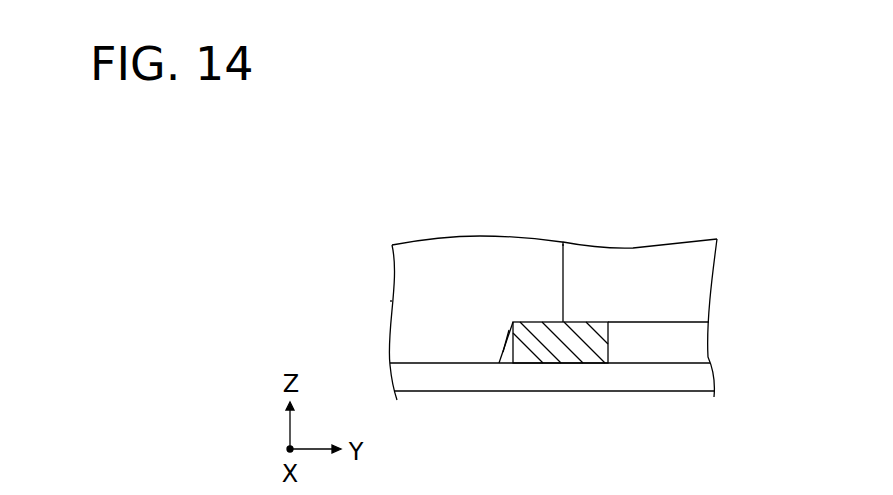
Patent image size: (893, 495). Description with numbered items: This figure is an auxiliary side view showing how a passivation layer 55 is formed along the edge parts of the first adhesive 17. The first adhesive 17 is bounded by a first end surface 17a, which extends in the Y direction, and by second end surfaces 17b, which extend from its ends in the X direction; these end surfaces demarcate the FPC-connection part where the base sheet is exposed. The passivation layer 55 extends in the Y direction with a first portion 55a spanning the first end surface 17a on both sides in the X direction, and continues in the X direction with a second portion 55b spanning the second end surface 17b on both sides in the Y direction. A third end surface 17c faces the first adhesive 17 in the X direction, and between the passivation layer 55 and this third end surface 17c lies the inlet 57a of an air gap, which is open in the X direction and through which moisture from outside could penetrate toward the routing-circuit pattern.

The first adhesive 17 is at (478, 224).
The first end surface 17a is at (644, 282).
The second end surface 17b is at (563, 283).
The third end surface 17c is at (425, 299).
The passivation layer 55 is at (720, 345).
The first portion 55a is at (683, 335).
The second portion 55b is at (556, 345).
The inlet 57a is at (503, 351).